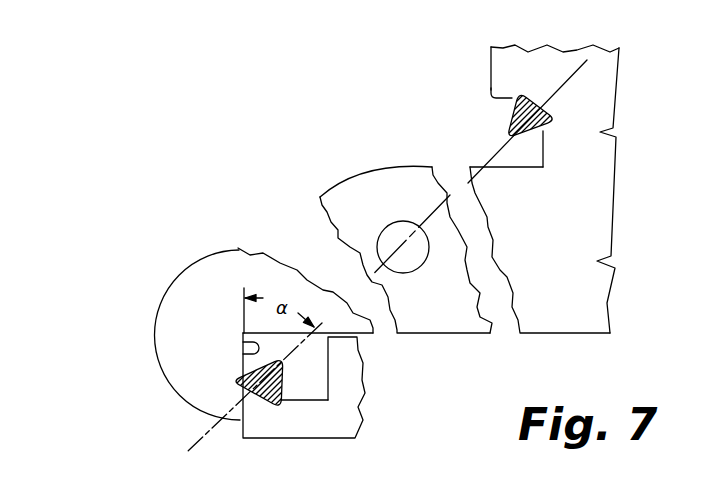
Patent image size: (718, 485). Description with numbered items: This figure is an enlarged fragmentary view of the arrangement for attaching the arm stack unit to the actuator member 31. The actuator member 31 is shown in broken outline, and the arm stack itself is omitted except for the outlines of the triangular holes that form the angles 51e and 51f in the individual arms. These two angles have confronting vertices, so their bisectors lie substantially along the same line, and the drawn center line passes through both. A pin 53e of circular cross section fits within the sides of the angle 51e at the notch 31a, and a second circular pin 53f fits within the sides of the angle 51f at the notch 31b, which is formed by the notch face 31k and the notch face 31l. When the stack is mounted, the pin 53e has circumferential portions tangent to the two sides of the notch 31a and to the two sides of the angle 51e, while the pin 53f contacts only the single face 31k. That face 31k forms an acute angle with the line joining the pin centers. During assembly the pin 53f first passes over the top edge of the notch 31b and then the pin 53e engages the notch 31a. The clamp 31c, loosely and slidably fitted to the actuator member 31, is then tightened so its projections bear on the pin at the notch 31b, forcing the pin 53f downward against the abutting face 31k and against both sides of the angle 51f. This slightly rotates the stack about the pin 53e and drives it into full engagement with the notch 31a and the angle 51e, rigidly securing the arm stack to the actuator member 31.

The actuator member 31 is at (498, 188).
The notch 31a is at (548, 100).
The angle 51e is at (562, 120).
The pin 53e is at (510, 113).
The notch 31b is at (240, 331).
The notch face 31k is at (243, 343).
The angle 51f is at (230, 382).
The pin 53f is at (282, 382).
The notch face 31l is at (307, 407).
The clamp 31c is at (348, 433).